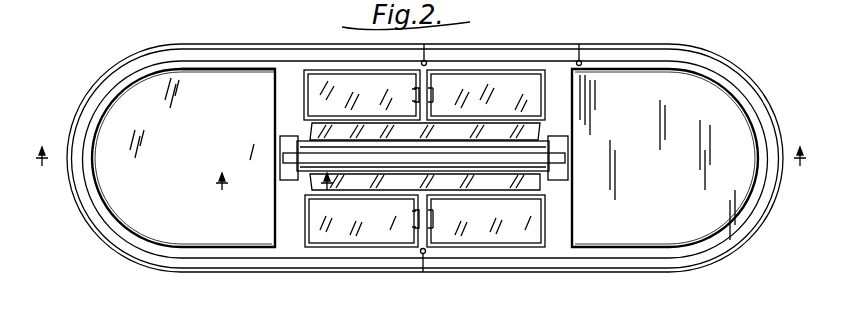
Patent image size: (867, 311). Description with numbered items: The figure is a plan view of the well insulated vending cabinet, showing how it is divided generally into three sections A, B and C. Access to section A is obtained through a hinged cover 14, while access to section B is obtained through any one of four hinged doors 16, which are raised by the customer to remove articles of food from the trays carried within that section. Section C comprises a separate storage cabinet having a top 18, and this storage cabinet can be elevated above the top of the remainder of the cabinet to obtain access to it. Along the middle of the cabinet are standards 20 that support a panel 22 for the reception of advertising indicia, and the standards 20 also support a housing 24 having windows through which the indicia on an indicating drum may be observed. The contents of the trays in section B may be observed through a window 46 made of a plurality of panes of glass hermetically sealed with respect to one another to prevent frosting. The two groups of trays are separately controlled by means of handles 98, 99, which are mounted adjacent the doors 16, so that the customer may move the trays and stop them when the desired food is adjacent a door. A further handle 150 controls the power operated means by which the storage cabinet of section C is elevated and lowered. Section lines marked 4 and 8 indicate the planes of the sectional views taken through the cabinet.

The section A is at (157, 100).
The section B is at (520, 90).
The section C is at (674, 126).
The hinged cover 14 is at (220, 77).
The hinged doors 16 is at (336, 82).
The top 18 is at (640, 80).
The standards 20 is at (288, 148).
The panel 22 is at (560, 160).
The housing 24 is at (558, 135).
The window 46 is at (540, 187).
The handle 98 is at (424, 264).
The handle 99 is at (425, 52).
The handle 150 is at (580, 52).
The section line 4 is at (421, 168).
The section line 8 is at (281, 192).